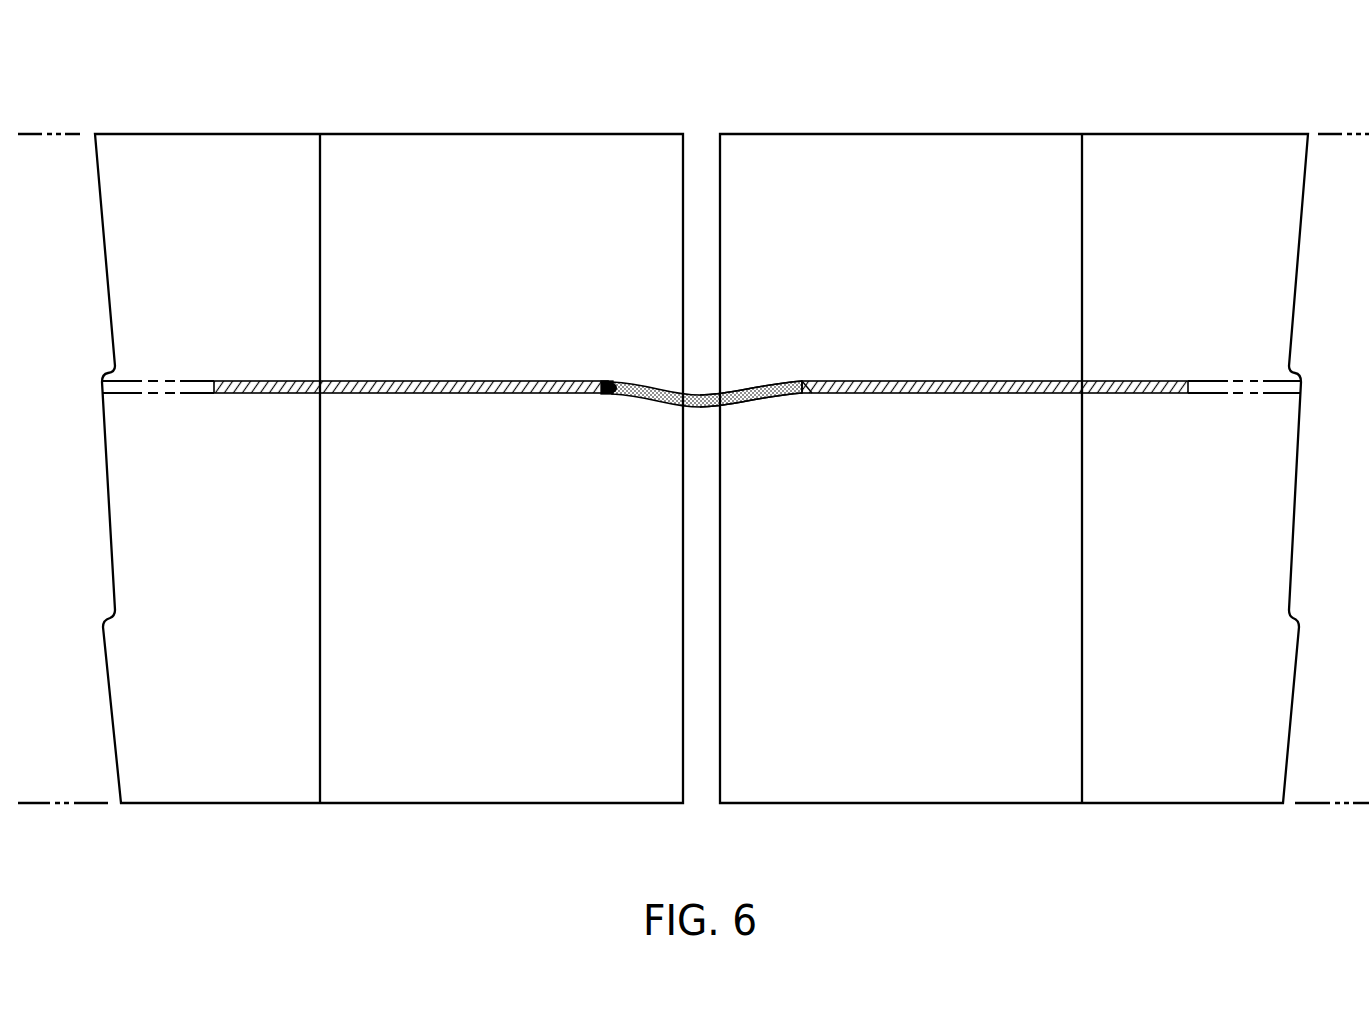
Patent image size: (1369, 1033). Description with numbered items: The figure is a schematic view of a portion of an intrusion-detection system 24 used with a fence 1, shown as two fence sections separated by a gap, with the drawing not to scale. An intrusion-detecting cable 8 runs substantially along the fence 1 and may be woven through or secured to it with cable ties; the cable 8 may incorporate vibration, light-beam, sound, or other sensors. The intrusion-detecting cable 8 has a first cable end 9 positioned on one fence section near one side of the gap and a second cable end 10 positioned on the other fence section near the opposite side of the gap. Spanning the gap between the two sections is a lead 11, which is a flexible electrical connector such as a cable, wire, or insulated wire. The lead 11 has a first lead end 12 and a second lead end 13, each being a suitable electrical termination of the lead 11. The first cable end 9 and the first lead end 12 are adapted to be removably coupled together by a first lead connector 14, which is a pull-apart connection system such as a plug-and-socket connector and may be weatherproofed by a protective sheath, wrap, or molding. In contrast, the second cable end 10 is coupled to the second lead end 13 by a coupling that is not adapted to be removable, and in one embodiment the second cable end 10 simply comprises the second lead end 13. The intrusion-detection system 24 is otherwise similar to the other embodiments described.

The fence 1 is at (273, 804).
The intrusion-detecting cable 8 is at (440, 380).
The first cable end 9 is at (601, 380).
The second cable end 10 is at (818, 381).
The lead 11 is at (703, 362).
The first lead end 12 is at (632, 398).
The second lead end 13 is at (770, 398).
The first lead connector 14 is at (612, 396).
The intrusion-detection system 24 is at (178, 92).